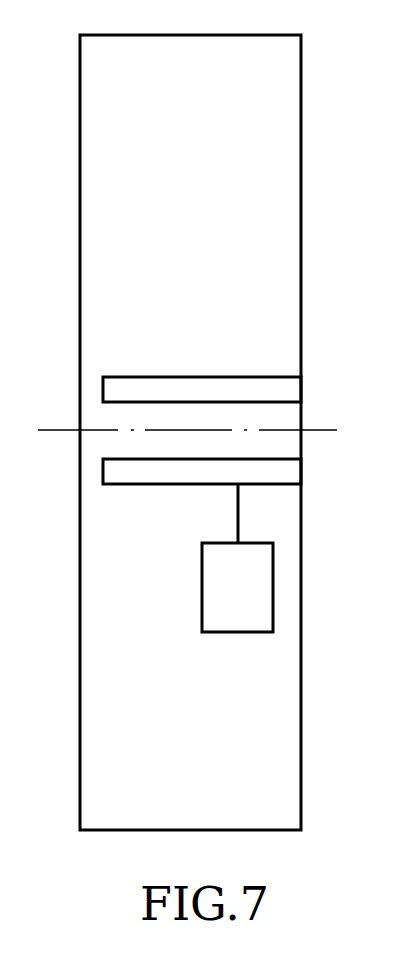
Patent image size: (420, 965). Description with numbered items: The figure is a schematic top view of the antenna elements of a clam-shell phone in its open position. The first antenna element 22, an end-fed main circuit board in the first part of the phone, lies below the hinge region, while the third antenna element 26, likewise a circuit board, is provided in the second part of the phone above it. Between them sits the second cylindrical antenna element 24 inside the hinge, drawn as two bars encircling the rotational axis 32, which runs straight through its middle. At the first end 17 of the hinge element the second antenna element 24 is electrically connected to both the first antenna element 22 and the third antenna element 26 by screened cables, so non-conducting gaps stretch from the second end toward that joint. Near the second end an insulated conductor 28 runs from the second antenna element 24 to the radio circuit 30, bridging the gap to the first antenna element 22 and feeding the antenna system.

The first end of the hinge element 17 is at (80, 421).
The first antenna element 22 is at (263, 722).
The second cylindrical antenna element 24 is at (287, 445).
The third antenna element 26 is at (263, 203).
The insulated conductor 28 is at (238, 478).
The radio circuit 30 is at (253, 603).
The rotational axis 32 is at (319, 430).